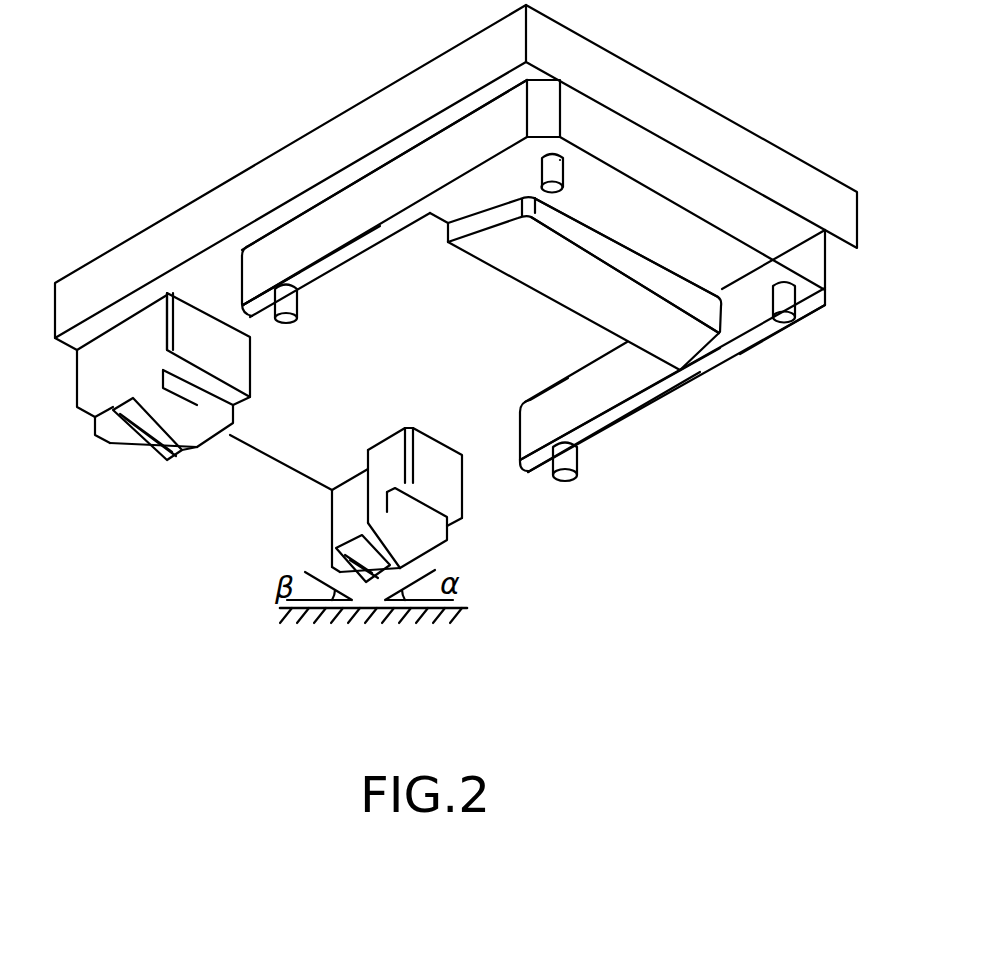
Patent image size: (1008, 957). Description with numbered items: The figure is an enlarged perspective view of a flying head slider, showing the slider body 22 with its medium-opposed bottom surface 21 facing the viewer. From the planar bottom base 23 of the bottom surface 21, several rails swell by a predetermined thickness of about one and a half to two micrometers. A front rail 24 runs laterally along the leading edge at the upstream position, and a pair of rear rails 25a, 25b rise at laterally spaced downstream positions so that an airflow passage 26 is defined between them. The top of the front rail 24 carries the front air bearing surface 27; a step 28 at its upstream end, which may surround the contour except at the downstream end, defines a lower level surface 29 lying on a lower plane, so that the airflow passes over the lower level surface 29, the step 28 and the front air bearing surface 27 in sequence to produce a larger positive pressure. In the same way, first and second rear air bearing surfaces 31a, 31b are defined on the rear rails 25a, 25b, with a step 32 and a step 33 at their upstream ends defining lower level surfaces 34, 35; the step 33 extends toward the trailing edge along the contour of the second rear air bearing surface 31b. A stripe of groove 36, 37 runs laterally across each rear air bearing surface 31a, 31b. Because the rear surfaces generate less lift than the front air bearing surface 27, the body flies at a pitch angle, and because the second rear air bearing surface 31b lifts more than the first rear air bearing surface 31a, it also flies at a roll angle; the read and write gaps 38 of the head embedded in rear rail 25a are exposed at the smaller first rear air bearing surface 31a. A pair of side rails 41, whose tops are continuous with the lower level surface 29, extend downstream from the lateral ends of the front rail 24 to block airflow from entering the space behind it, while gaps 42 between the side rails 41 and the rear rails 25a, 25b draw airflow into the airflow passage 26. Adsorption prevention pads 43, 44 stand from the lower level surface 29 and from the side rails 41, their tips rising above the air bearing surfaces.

The bottom surface 21 is at (708, 458).
The slider body 22 is at (440, 53).
The bottom base 23 is at (398, 390).
The front rail 24 is at (482, 262).
The rear rail 25a is at (330, 518).
The rear rail 25b is at (113, 330).
The airflow passage 26 is at (303, 472).
The front air bearing surface 27 is at (568, 298).
The step 28 is at (615, 253).
The lower level surface 29 is at (738, 345).
The first rear air bearing surface 31a is at (432, 543).
The second rear air bearing surface 31b is at (200, 432).
The step 32 is at (410, 500).
The step 33 is at (195, 385).
The lower level surface 34 is at (448, 515).
The lower level surface 35 is at (237, 397).
The groove 36 is at (355, 535).
The groove 37 is at (182, 457).
The read and write gaps 38 is at (368, 585).
The side rails 41 is at (327, 277).
The gaps 42 is at (240, 267).
The adsorption prevention pad 43 is at (566, 170).
The adsorption prevention pad 44 is at (297, 307).